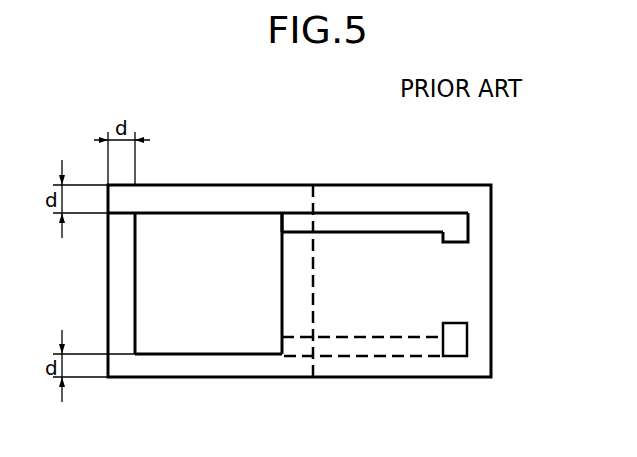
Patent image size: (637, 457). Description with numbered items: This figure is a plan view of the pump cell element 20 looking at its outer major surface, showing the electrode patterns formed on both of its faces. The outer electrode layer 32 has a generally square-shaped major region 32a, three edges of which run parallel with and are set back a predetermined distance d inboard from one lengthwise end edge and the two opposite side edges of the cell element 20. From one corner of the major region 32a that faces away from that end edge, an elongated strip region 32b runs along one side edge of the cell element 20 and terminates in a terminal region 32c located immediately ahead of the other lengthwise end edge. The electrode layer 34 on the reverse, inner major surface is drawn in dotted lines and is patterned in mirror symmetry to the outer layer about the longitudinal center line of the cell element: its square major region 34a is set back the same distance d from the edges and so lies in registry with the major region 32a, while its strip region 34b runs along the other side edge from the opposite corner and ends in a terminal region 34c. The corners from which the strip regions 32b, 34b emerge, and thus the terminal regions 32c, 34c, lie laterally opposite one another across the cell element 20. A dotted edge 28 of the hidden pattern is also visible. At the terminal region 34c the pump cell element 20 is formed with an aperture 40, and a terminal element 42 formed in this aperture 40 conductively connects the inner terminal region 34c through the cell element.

The pump cell element 20 is at (491, 275).
The hidden electrode edge 28 is at (312, 362).
The electrode layer 32 is at (205, 206).
The major region 32a is at (175, 356).
The strip region 32b is at (392, 212).
The terminal region 32c is at (468, 222).
The electrode layer 34 is at (288, 362).
The major region 34a is at (281, 216).
The strip region 34b is at (392, 358).
The terminal region 34c is at (455, 358).
The aperture 40 is at (460, 338).
The terminal element 42 is at (467, 330).